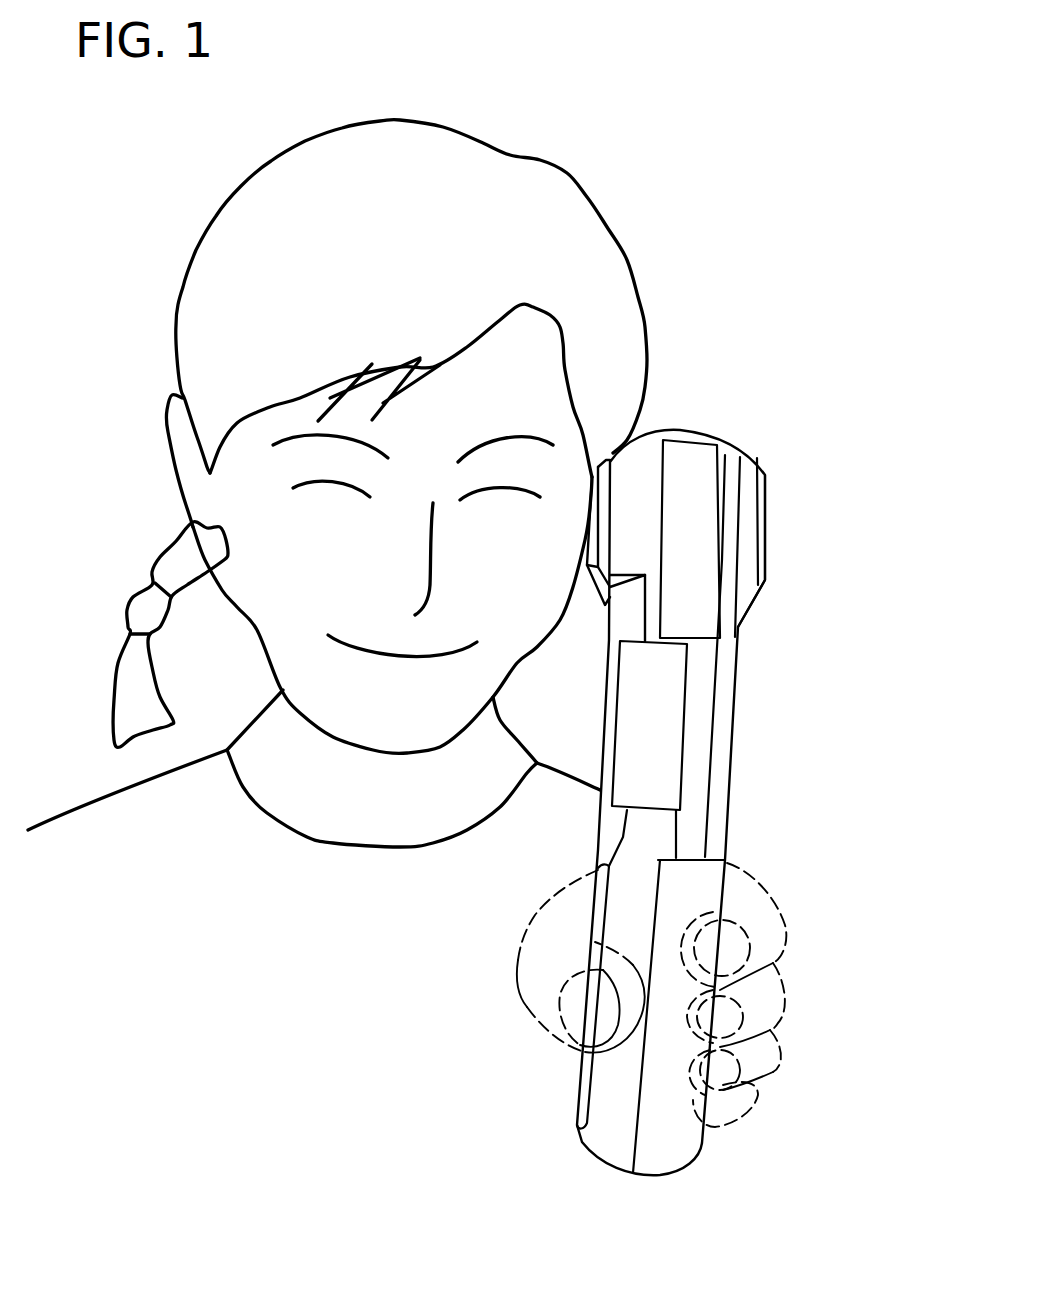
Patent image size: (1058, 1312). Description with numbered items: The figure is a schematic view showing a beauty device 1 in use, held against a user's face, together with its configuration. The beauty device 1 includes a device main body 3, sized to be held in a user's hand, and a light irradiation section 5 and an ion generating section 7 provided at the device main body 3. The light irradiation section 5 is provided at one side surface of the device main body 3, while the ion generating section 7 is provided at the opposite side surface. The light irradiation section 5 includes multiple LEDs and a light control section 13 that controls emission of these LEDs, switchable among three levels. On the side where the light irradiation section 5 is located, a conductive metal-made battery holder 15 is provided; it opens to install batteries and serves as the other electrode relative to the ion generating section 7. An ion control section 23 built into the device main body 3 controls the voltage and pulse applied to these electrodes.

The beauty device 1 is at (765, 410).
The device main body 3 is at (723, 750).
The light irradiation section 5 is at (771, 468).
The ion generating section 7 is at (607, 450).
The light control section 13 is at (727, 573).
The battery holder 15 is at (580, 1090).
The ion control section 23 is at (678, 697).